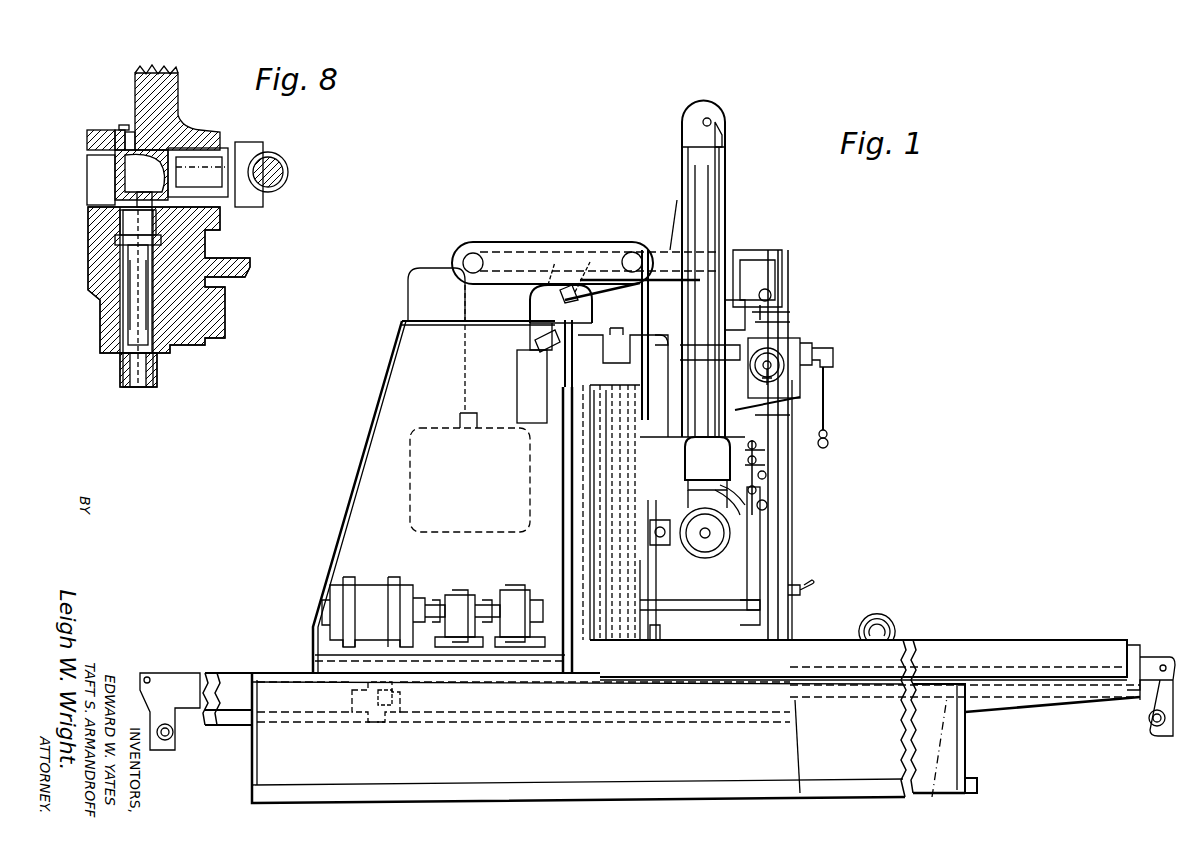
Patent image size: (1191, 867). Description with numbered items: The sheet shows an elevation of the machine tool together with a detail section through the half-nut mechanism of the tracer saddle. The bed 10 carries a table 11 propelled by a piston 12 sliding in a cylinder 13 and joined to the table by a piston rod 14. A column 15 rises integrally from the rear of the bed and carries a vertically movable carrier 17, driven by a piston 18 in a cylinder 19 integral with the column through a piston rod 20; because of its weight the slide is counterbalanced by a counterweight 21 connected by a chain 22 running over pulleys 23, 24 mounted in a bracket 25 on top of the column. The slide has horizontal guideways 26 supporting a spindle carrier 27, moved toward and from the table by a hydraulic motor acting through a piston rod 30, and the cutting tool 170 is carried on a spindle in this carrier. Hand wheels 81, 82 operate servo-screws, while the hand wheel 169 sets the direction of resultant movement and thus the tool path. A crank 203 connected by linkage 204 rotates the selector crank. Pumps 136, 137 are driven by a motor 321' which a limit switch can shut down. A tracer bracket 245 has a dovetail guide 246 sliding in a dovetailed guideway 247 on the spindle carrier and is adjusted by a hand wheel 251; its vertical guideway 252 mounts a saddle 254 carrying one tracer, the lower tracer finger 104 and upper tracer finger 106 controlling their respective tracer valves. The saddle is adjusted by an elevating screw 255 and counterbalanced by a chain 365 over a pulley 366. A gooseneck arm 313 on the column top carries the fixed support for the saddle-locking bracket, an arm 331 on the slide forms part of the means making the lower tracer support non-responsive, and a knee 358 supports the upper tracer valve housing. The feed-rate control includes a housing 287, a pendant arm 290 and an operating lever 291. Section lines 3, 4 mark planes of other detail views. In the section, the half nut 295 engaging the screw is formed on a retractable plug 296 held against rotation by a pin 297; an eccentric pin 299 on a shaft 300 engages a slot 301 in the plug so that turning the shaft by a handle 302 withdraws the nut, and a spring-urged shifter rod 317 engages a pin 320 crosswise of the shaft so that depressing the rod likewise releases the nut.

In FIG. 1, the bed 10 is at (958, 752).
In FIG. 1, the table 11 is at (1100, 648).
In FIG. 1, the piston 12 is at (800, 760).
In FIG. 1, the cylinder 13 is at (385, 722).
In FIG. 1, the piston rod 14 is at (935, 757).
In FIG. 1, the column 15 is at (395, 374).
In FIG. 1, the vertically movable carrier 17 is at (583, 487).
In FIG. 1, the piston 18 is at (650, 600).
In FIG. 1, the cylinder 19 is at (603, 552).
In FIG. 1, the piston rod 20 is at (600, 410).
In FIG. 1, the counterweight 21 is at (410, 475).
In FIG. 1, the chain 22 is at (462, 290).
In FIG. 1, the pulley 23 is at (473, 253).
In FIG. 1, the pulley 24 is at (636, 256).
In FIG. 1, the bracket 25 is at (540, 243).
In FIG. 1, the horizontal guideways 26 is at (660, 630).
In FIG. 1, the spindle carrier 27 is at (765, 575).
In FIG. 1, the piston rod 30 is at (660, 560).
In FIG. 1, the section line 3- 3 is at (752, 289).
In FIG. 1, the section line 4- 4 is at (792, 322).
In FIG. 1, the hand wheel 81 is at (888, 628).
In FIG. 1, the hand wheel 82 is at (800, 592).
In FIG. 1, the tracer finger 104 is at (790, 385).
In FIG. 1, the tracer finger 106 is at (772, 293).
In FIG. 1, the pump 136 is at (513, 590).
In FIG. 1, the pump 137 is at (452, 592).
In FIG. 1, the hand wheel 169 is at (785, 372).
In FIG. 1, the cutting tool 170 is at (703, 538).
In FIG. 1, the crank 203 is at (530, 375).
In FIG. 1, the linkage 204 is at (585, 285).
In FIG. 1, the tracer bracket 245 is at (682, 160).
In FIG. 1, the dovetail guide 246 is at (745, 508).
In FIG. 1, the dovetailed guideway 247 is at (740, 518).
In FIG. 1, the hand wheel 251 is at (768, 500).
In FIG. 1, the vertical guideway 252 is at (727, 178).
In FIG. 8, the saddle 254 is at (180, 97).
In FIG. 1, the saddle 254 is at (745, 320).
In FIG. 8, the elevating screw 255 is at (289, 173).
In FIG. 1, the elevating screw 255 is at (745, 345).
In FIG. 1, the housing 287 is at (833, 352).
In FIG. 8, the pendant arm 290 is at (108, 170).
In FIG. 1, the pendant arm 290 is at (828, 397).
In FIG. 1, the operating lever 291 is at (830, 440).
In FIG. 8, the half nut 295 is at (258, 150).
In FIG. 8, the retractable plug 296 is at (222, 150).
In FIG. 8, the pin 297 is at (121, 127).
In FIG. 8, the pin 299 is at (135, 197).
In FIG. 8, the shaft 300 is at (128, 285).
In FIG. 8, the slot 301 is at (165, 153).
In FIG. 8, the handle 302 is at (158, 372).
In FIG. 1, the gooseneck arm 313 is at (657, 218).
In FIG. 8, the shifter rod 317 is at (116, 240).
In FIG. 8, the pin 320 is at (208, 258).
In FIG. 1, the motor 321' is at (373, 599).
In FIG. 1, the arm 331 is at (692, 455).
In FIG. 1, the knee 358 is at (790, 312).
In FIG. 1, the chain 365 is at (725, 145).
In FIG. 1, the pulley 366 is at (725, 118).